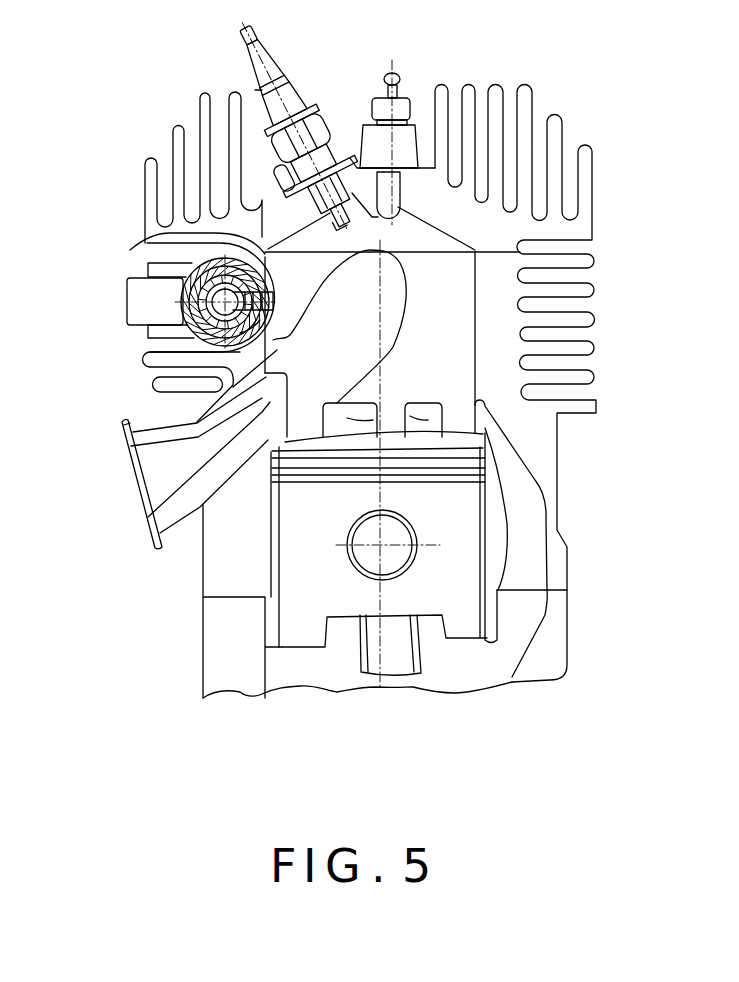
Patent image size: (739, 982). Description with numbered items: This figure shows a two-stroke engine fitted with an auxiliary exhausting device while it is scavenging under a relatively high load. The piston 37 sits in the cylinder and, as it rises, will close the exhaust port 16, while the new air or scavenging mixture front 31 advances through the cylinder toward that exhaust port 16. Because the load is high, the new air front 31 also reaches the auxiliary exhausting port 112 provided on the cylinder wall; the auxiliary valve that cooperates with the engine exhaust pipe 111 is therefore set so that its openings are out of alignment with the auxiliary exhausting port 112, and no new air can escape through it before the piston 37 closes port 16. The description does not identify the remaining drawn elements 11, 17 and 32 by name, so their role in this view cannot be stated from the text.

The cylinder 11 is at (445, 424).
The exhaust port 16 is at (147, 504).
The intake passage 17 is at (172, 392).
The scavenging mixture front 31 is at (150, 353).
The scavenging passage 32 is at (398, 308).
The piston 37 is at (458, 512).
The engine exhaust pipe 111 is at (183, 457).
The auxiliary exhausting port 112 is at (130, 250).